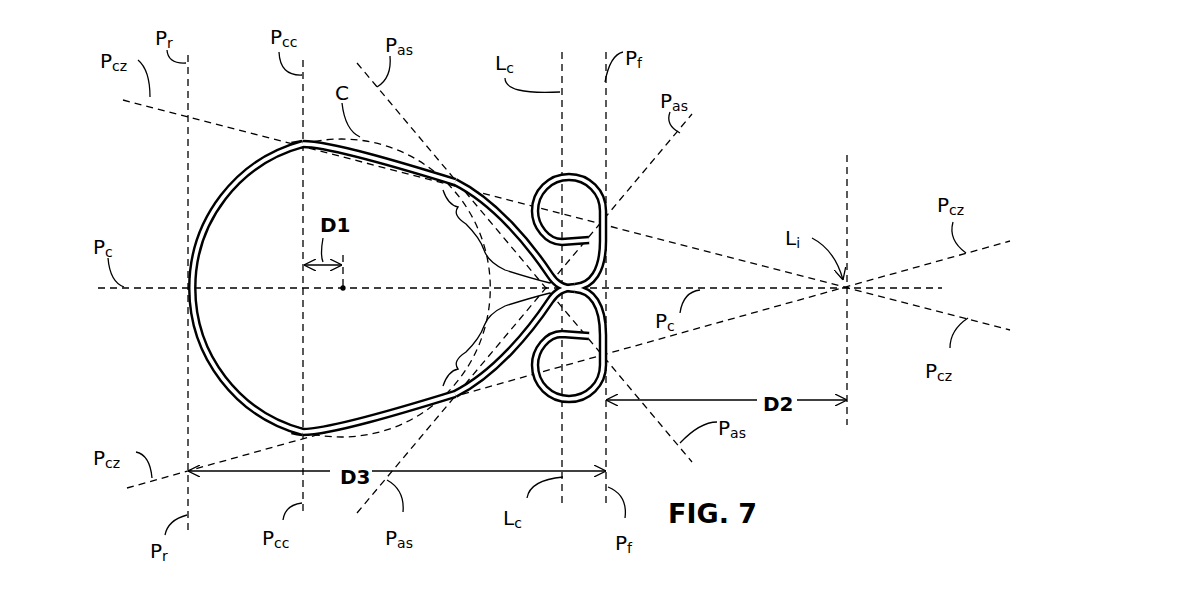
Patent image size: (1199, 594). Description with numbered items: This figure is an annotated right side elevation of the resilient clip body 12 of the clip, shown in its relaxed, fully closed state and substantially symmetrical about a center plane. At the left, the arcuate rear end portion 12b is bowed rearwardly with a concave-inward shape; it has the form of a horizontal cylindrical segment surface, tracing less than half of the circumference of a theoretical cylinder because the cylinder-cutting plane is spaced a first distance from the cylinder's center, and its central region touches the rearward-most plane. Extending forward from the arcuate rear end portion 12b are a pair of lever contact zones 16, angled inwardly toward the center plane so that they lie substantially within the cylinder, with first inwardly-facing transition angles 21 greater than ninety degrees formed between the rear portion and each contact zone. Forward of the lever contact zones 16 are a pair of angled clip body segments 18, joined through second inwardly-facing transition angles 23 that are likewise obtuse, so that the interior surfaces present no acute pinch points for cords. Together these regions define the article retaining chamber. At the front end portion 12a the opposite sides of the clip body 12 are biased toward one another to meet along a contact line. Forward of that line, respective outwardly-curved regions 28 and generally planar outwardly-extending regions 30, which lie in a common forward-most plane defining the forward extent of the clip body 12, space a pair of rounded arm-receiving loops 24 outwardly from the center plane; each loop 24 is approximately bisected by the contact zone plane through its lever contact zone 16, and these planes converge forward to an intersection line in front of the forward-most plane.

The resilient clip body 12 is at (459, 261).
The front end portion 12a is at (553, 288).
The arcuate rear end portion 12b is at (210, 162).
The lever contact zones 16 is at (444, 194).
The angled clip body segments 18 is at (496, 288).
The first inwardly-facing transition angles 21 is at (308, 163).
The second inwardly-facing transition angles 23 is at (445, 200).
The rounded arm-receiving loops 24 is at (585, 288).
The outwardly-curved regions 28 is at (576, 272).
The outwardly-extending regions 30 is at (613, 237).